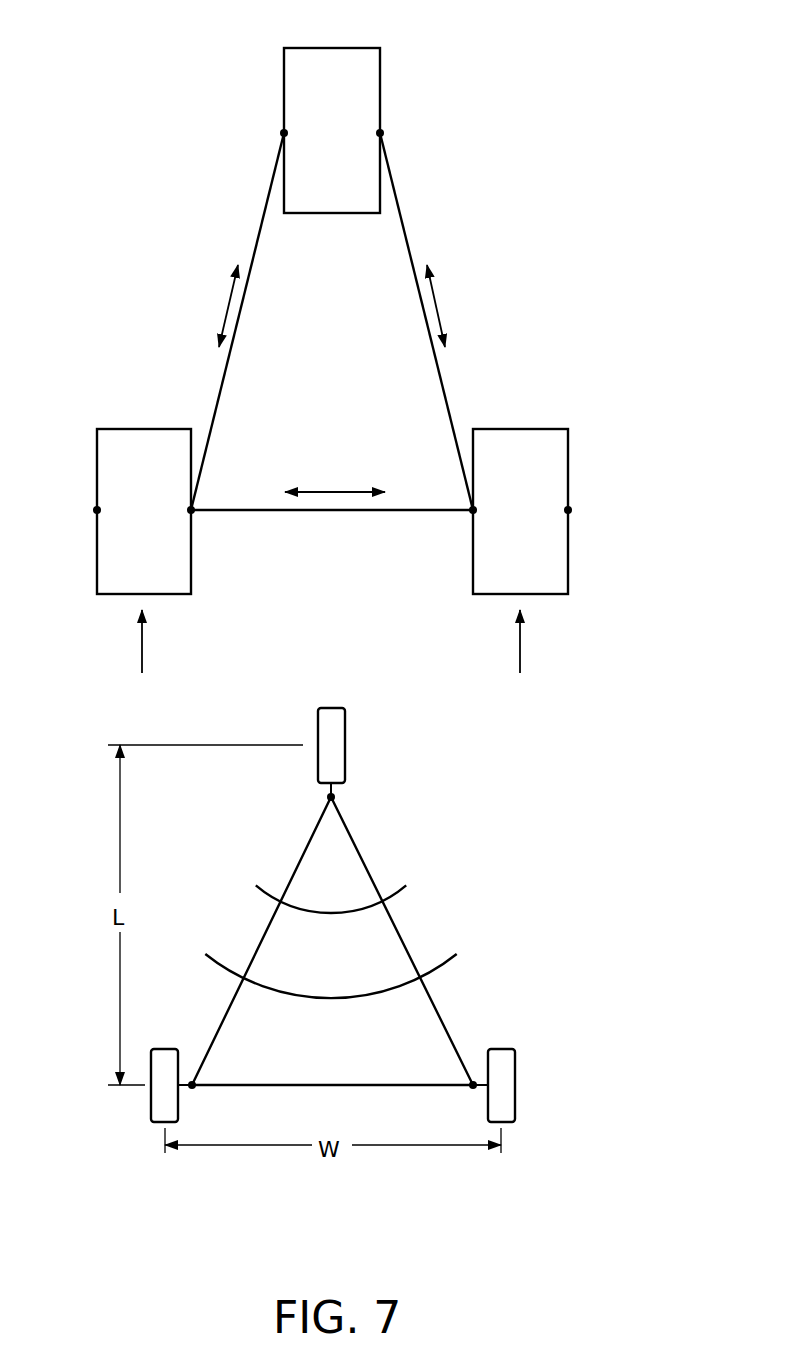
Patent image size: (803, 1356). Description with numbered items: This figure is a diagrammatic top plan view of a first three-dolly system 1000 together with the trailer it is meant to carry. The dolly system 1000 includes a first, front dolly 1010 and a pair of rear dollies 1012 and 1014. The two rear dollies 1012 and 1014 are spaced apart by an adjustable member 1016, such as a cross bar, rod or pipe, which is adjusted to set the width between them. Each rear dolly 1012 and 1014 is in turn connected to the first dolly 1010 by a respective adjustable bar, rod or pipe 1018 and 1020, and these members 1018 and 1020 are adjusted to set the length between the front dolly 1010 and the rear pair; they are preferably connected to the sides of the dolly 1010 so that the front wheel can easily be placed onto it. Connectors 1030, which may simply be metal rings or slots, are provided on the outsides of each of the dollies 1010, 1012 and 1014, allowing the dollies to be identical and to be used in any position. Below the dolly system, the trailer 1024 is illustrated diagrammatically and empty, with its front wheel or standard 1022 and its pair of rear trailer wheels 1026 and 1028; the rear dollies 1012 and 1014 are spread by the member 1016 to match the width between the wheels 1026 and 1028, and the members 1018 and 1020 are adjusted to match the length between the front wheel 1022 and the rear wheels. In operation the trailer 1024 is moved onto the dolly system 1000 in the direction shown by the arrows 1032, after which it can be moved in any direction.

The dolly system 1000 is at (542, 267).
The first dolly 1010 is at (326, 47).
The rear dolly 1012 is at (132, 428).
The rear dolly 1014 is at (502, 428).
The adjustable member 1016 is at (343, 513).
The adjustable bar 1018 is at (259, 232).
The adjustable bar 1020 is at (405, 232).
The front wheel 1022 is at (345, 745).
The trailer 1024 is at (410, 946).
The rear trailer wheel 1026 is at (151, 1118).
The rear trailer wheel 1028 is at (516, 1118).
The connectors 1030 is at (284, 133).
The arrows 1032 is at (143, 643).